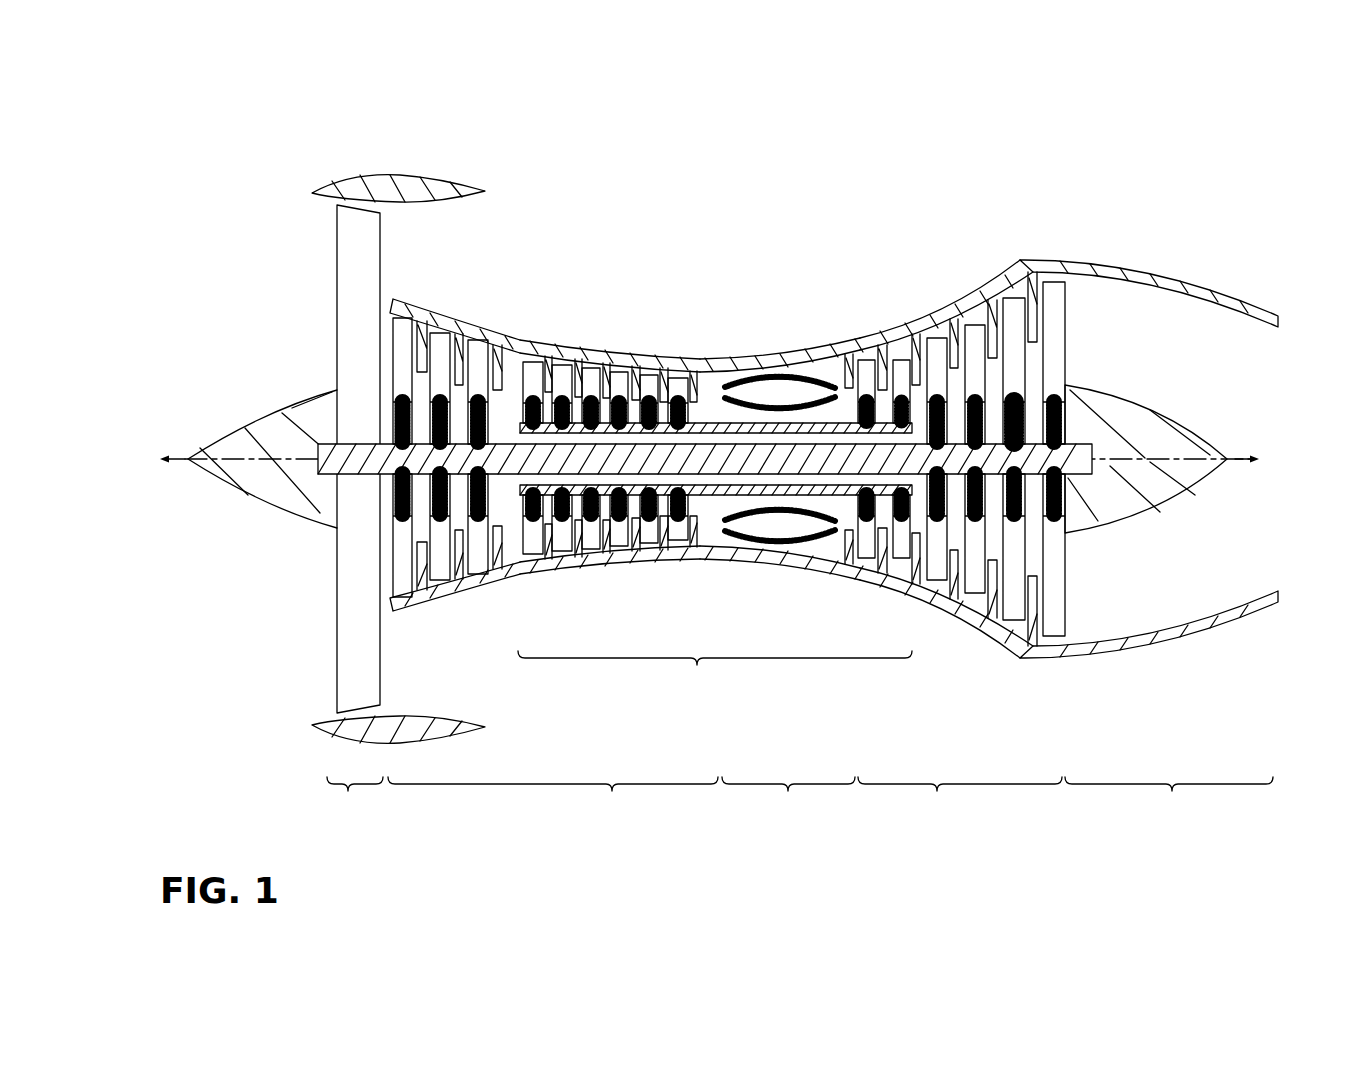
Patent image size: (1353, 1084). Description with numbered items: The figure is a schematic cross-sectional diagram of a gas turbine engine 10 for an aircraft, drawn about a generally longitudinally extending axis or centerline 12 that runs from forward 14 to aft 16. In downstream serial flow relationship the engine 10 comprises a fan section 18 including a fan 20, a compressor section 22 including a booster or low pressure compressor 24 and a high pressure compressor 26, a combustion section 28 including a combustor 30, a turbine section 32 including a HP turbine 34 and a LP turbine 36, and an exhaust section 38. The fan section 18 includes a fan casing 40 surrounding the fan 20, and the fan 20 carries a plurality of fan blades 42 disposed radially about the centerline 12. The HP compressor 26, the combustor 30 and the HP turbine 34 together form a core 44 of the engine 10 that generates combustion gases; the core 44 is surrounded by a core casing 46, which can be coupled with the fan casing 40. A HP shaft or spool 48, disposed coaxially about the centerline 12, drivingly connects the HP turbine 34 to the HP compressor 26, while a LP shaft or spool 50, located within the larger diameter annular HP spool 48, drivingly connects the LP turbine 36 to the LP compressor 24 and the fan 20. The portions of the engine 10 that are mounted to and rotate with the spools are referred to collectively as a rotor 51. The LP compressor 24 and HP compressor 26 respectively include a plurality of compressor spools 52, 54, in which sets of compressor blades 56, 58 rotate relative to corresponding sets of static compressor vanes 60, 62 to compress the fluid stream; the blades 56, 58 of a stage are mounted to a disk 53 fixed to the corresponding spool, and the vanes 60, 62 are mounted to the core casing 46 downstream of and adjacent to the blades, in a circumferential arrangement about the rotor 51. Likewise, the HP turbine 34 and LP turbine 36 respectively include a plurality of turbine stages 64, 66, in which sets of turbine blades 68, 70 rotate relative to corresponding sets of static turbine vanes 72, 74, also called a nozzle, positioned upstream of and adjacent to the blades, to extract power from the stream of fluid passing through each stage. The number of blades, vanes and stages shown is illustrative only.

The gas turbine engine 10 is at (213, 116).
The centerline 12 is at (247, 459).
The forward 14 is at (159, 460).
The aft 16 is at (1265, 460).
The fan section 18 is at (355, 799).
The fan 20 is at (330, 266).
The compressor section 22 is at (553, 799).
The low pressure compressor 24 is at (514, 598).
The high pressure compressor 26 is at (658, 572).
The combustion section 28 is at (788, 799).
The combustor 30 is at (834, 364).
The turbine section 32 is at (960, 799).
The HP turbine 34 is at (844, 590).
The LP turbine 36 is at (964, 638).
The exhaust section 38 is at (1169, 799).
The fan casing 40 is at (400, 176).
The fan blades 42 is at (347, 658).
The core 44 is at (715, 674).
The core casing 46 is at (760, 352).
The HP spool 48 is at (717, 420).
The LP spool 50 is at (500, 443).
The rotor 51 is at (640, 430).
The compressor spools 52 is at (389, 290).
The disk 53 is at (468, 417).
The compressor spools 54 is at (534, 333).
The compressor blades 56 is at (423, 352).
The compressor blades 58 is at (549, 375).
The static compressor vanes 60 is at (460, 365).
The static compressor vanes 62 is at (538, 372).
The turbine stages 64 is at (870, 325).
The turbine stages 66 is at (990, 269).
The turbine blades 68 is at (902, 365).
The turbine blades 70 is at (1012, 325).
The static turbine vanes 72 is at (883, 372).
The static turbine vanes 74 is at (993, 345).